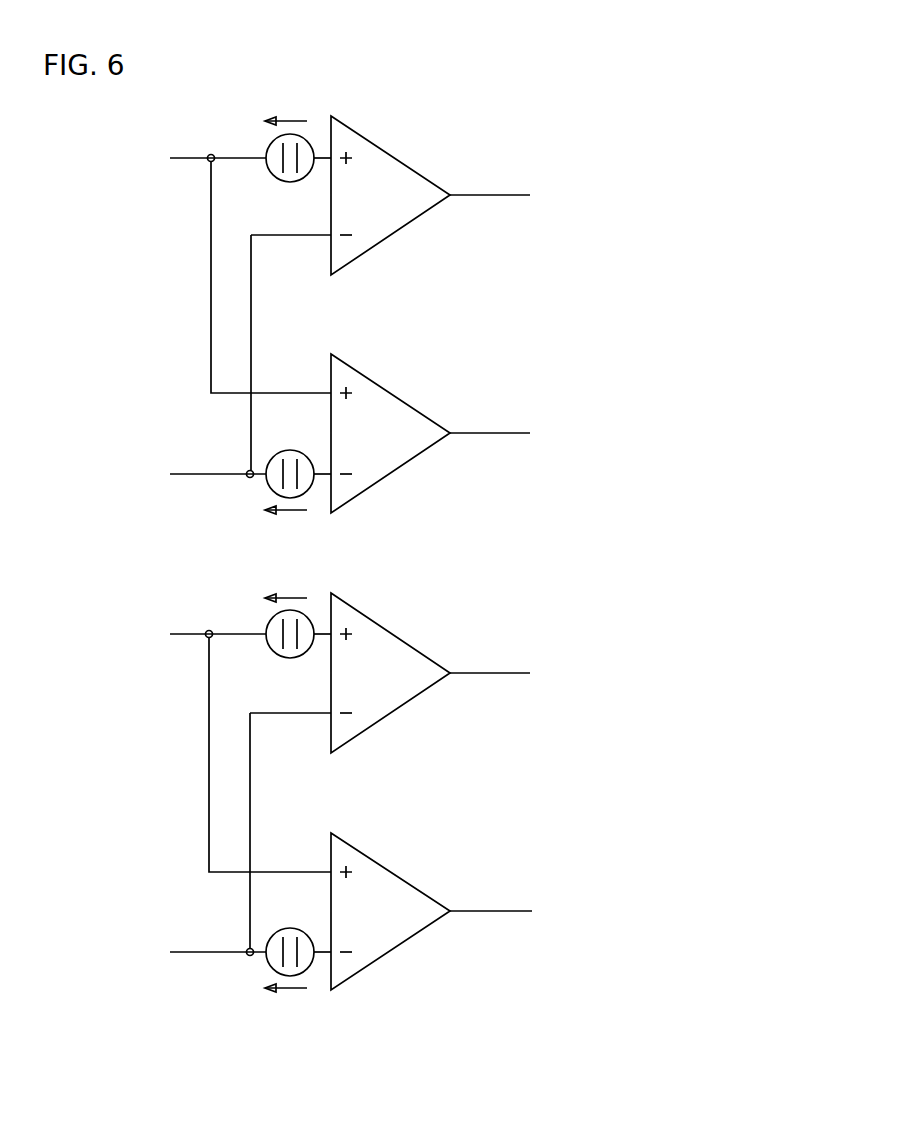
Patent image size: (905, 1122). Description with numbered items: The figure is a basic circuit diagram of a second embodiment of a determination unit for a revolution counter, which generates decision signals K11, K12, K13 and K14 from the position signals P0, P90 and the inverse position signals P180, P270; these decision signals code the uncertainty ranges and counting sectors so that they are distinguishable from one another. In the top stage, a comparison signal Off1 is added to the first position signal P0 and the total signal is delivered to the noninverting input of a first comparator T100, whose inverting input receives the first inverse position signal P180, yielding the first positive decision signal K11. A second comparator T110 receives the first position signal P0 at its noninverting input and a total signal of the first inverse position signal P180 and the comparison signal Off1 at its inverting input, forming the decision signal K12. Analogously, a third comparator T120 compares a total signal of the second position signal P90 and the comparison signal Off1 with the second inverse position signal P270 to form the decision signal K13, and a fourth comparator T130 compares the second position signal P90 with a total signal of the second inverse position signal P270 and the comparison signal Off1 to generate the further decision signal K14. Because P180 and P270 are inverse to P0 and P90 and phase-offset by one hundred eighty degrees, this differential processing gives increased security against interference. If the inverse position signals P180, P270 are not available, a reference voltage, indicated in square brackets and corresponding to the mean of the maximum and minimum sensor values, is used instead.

The first comparator T100 is at (390, 155).
The second comparator T110 is at (391, 394).
The third comparator T120 is at (391, 633).
The fourth comparator T130 is at (391, 871).
The first positive decision signal K11 is at (511, 196).
The decision signal K12 is at (511, 434).
The decision signal K13 is at (511, 674).
The further decision signal K14 is at (512, 912).
The first position signal P0 is at (234, 271).
The second position signal P90 is at (233, 749).
The first inverse position signal P180 is at (194, 375).
The second inverse position signal P270 is at (194, 853).
The comparison signal Off1 is at (289, 553).